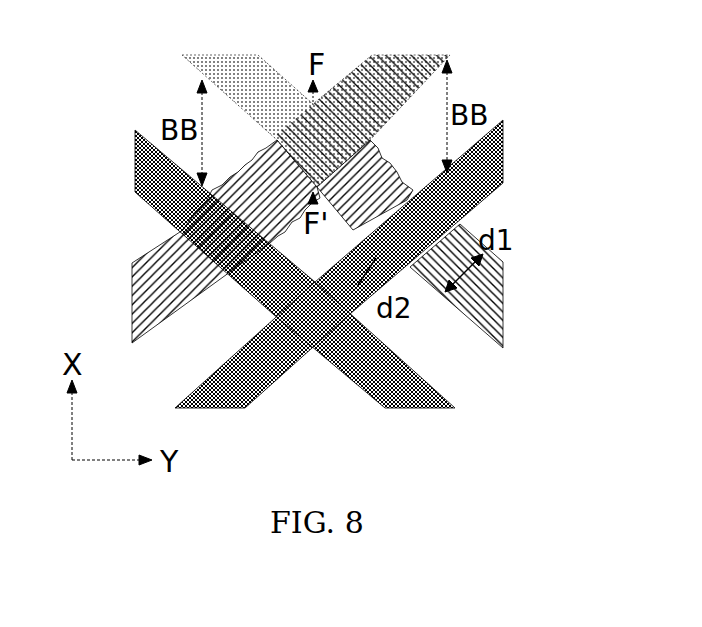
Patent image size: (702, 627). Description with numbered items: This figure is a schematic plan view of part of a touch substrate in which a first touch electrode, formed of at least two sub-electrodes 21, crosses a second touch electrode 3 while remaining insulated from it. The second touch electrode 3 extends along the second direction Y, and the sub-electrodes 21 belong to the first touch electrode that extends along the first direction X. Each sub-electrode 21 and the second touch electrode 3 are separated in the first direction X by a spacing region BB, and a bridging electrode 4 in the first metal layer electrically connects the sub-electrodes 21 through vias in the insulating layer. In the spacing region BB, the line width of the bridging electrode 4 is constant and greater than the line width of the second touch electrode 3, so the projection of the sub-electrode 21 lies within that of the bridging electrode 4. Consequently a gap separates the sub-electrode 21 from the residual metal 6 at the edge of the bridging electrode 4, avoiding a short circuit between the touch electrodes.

The second touch electrode 3 is at (405, 412).
The bridging electrode 4 is at (132, 288).
The residual metal 6 is at (490, 200).
The sub-electrode 21 is at (412, 55).